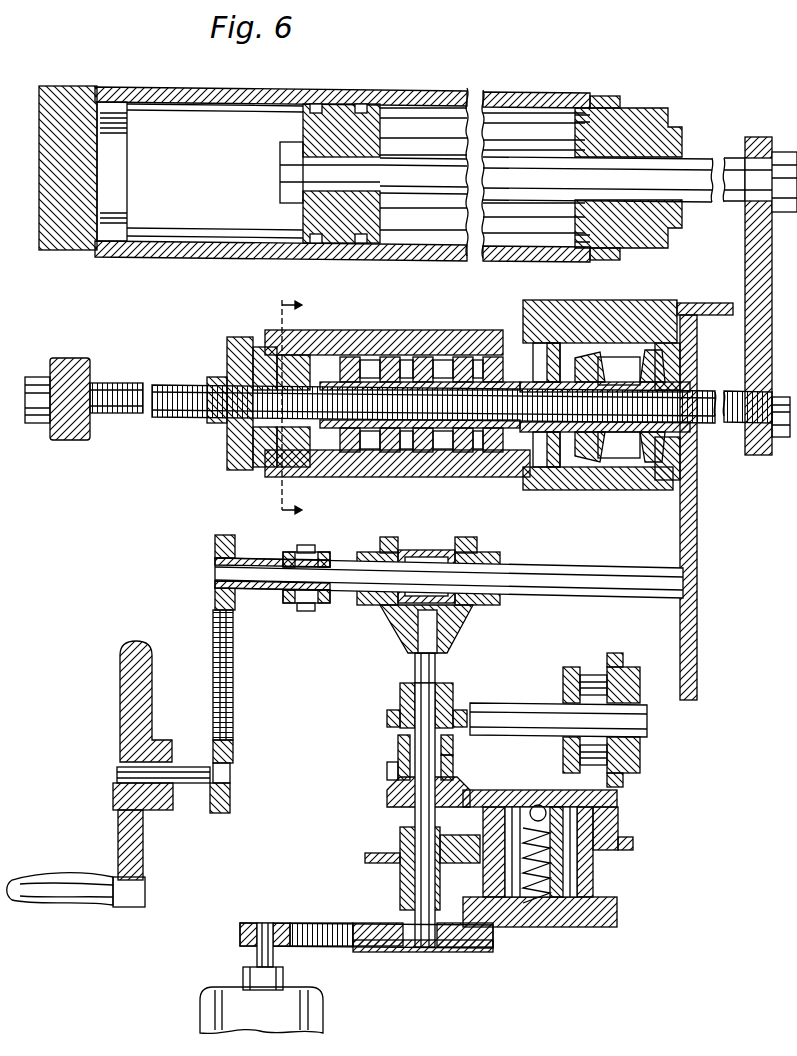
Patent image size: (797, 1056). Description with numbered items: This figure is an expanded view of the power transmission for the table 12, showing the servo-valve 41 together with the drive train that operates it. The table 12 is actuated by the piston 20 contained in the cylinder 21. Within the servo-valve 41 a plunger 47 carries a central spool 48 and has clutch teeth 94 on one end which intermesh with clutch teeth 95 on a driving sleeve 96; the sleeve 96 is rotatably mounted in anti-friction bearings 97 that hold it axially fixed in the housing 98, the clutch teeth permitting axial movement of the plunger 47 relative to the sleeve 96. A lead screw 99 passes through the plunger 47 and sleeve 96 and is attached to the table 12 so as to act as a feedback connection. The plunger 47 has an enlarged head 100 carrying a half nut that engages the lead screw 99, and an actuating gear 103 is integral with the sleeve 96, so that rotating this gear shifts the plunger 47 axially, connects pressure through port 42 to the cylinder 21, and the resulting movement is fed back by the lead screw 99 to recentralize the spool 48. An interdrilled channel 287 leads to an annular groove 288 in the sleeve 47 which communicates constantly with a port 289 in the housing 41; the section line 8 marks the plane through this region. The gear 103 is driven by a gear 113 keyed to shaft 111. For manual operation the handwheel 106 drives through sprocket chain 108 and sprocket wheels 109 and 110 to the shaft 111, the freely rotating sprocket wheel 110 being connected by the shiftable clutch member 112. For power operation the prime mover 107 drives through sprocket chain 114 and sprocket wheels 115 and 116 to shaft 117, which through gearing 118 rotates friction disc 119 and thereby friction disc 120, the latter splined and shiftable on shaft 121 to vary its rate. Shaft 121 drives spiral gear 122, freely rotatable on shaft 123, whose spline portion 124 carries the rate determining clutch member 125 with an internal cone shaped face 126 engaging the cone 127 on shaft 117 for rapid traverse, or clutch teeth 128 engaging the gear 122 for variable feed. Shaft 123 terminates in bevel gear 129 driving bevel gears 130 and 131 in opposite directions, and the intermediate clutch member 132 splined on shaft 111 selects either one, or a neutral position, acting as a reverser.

The piston 20 is at (345, 104).
The cylinder 21 is at (560, 94).
The table 12 is at (745, 233).
The lead screw 99 is at (182, 418).
The enlarged head 100 is at (253, 370).
The servo-valve 41 is at (265, 478).
The section line 8- 8 is at (301, 411).
The annular groove 288 is at (358, 357).
The central spool 48 is at (422, 357).
The plunger 47 is at (490, 357).
The interdrilled channel 287 is at (300, 472).
The port 289 is at (352, 477).
The port 42 is at (430, 477).
The clutch teeth 94 is at (530, 320).
The clutch teeth 95 is at (548, 345).
The anti-friction bearings 97 is at (598, 352).
The driving sleeve 96 is at (619, 407).
The actuating gear 103 is at (695, 346).
The fixed housing 98 is at (632, 490).
The gear 113 is at (697, 548).
The sprocket wheel 110 is at (215, 601).
The shaft 111 is at (266, 568).
The shiftable clutch member 112 is at (315, 603).
The bevel gear 130 is at (386, 551).
The bevel gear 131 is at (466, 551).
The intermediate clutch member 132 is at (440, 541).
The bevel gear 129 is at (455, 640).
The shaft 123 is at (436, 667).
The sprocket chain 108 is at (233, 678).
The sprocket wheel 109 is at (233, 748).
The handwheel 106 is at (118, 838).
The spiral gear 122 is at (400, 713).
The spline portion 124 is at (398, 745).
The clutch teeth 128 is at (455, 740).
The rate determining clutch member 125 is at (455, 766).
The internal cone shaped face 126 is at (390, 772).
The cone 127 is at (387, 795).
The shaft 121 is at (542, 726).
The friction disc 120 is at (622, 780).
The friction disc 119 is at (610, 810).
The gearing 118 is at (442, 840).
The shaft 117 is at (415, 890).
The sprocket chain 114 is at (320, 925).
The sprocket wheel 115 is at (258, 925).
The sprocket wheel 116 is at (480, 952).
The prime mover 107 is at (300, 1008).